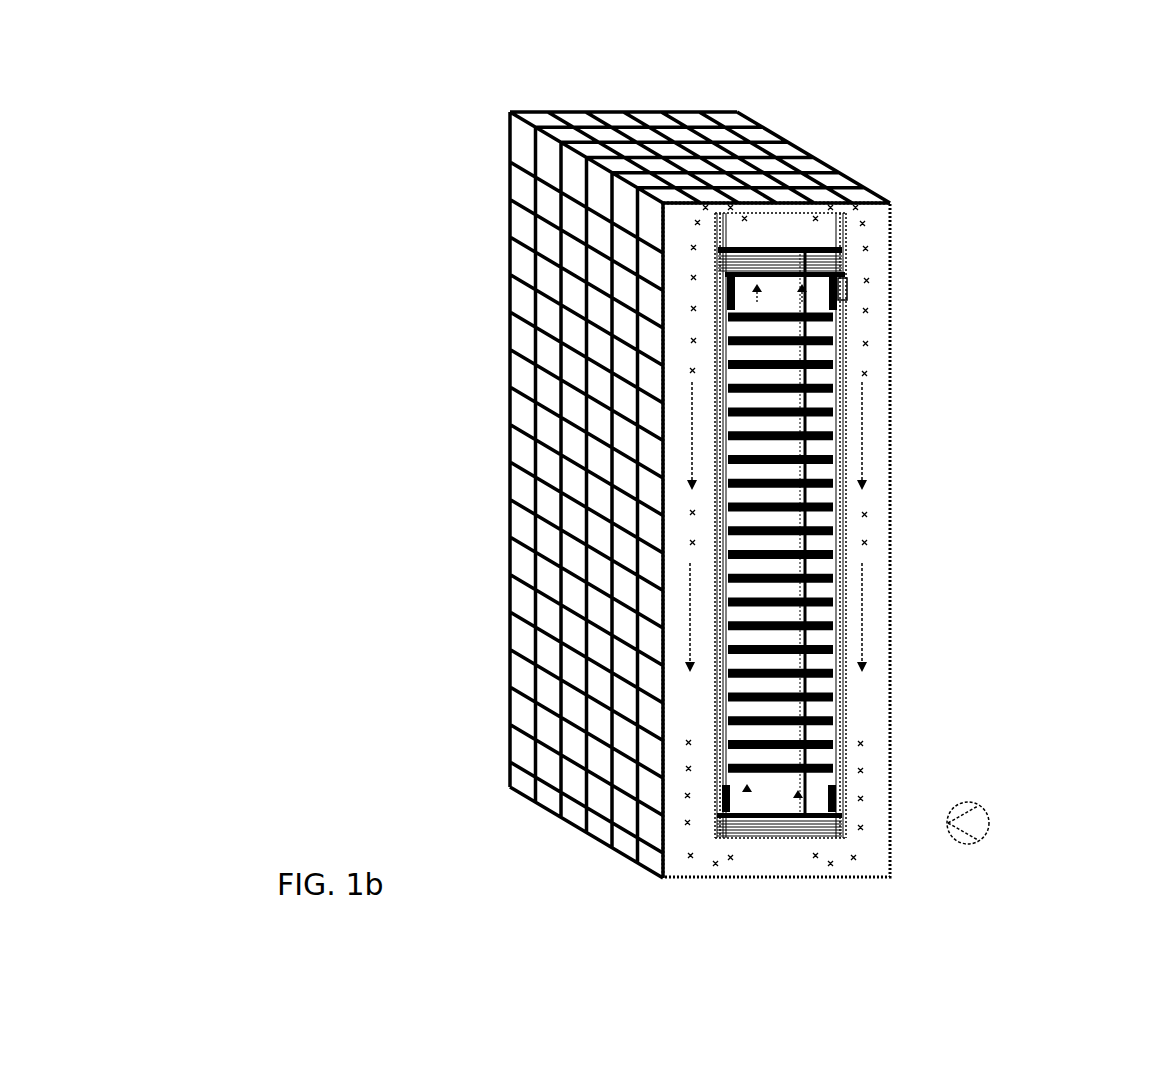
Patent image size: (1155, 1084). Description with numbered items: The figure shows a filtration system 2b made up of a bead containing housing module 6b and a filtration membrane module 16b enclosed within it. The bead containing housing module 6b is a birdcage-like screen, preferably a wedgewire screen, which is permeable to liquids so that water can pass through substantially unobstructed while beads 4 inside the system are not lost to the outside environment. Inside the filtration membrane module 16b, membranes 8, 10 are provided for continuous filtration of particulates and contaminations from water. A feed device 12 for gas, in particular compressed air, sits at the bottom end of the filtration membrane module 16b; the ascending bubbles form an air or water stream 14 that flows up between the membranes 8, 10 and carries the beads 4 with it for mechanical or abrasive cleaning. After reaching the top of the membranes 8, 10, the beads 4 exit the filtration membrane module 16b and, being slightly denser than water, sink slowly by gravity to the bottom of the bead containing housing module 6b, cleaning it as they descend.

The filtration system 2b is at (456, 241).
The beads 4 is at (862, 345).
The bead containing housing module 6b is at (522, 338).
The membrane 8 is at (835, 511).
The membrane 10 is at (790, 552).
The feed device 12 is at (840, 823).
The air or water stream 14 is at (800, 805).
The filtration membrane module 16b is at (862, 668).